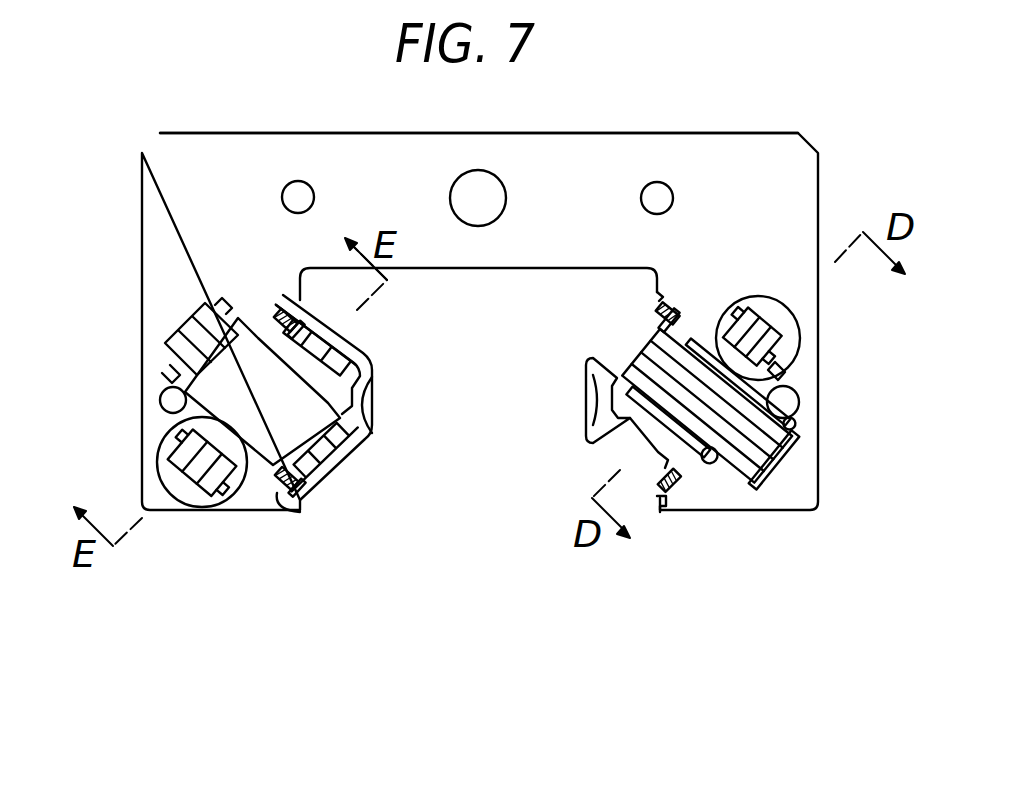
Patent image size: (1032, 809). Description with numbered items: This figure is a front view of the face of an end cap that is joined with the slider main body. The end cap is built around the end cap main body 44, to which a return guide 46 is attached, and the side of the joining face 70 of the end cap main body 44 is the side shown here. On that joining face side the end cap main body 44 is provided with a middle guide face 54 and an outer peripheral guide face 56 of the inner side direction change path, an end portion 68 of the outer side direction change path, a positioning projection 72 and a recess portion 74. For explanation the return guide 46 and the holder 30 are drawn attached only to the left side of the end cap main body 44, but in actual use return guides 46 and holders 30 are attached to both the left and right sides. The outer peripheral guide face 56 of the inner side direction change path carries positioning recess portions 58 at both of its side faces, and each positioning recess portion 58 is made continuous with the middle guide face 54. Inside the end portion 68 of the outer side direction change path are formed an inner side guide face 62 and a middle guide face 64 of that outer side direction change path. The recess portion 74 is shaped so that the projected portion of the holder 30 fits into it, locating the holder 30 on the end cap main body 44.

The holder 30 is at (372, 432).
The end cap main body 44 is at (128, 236).
The return guide 46 is at (223, 392).
The middle guide face 54 is at (788, 458).
The outer peripheral guide face 56 is at (745, 495).
The positioning recess portion 58 is at (780, 428).
The inner side guide face 62 is at (785, 352).
The middle guide face 64 is at (780, 374).
The end portion 68 is at (202, 505).
The joining face 70 is at (165, 190).
The positioning projection 72 is at (293, 494).
The recess portion 74 is at (662, 500).